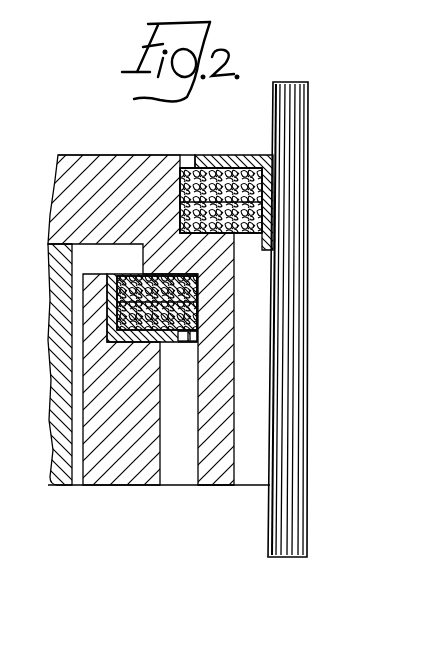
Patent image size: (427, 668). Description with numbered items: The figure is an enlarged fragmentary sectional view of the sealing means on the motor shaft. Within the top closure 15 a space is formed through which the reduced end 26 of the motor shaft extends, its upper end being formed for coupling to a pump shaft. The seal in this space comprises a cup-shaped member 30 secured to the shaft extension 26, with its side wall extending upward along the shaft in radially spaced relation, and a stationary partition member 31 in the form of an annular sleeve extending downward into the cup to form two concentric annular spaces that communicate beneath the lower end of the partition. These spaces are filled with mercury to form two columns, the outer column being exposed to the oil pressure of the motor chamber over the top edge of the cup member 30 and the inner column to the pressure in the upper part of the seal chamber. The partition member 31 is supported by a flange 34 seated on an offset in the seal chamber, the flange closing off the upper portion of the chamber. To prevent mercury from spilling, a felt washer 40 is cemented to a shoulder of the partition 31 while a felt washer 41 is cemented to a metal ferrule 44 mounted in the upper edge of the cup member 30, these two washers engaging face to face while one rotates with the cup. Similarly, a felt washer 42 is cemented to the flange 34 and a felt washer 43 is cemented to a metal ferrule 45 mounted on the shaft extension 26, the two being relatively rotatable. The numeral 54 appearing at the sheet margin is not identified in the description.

The top closure 15 is at (53, 448).
The reduced end of the motor shaft 26 is at (277, 540).
The cup-shaped member 30 is at (128, 462).
The partition member 31 is at (215, 470).
The flange 34 is at (88, 168).
The felt washer 40 is at (133, 276).
The felt washer 41 is at (190, 342).
The felt washer 42 is at (250, 234).
The felt washer 43 is at (213, 167).
The metal ferrule 44 is at (128, 302).
The metal ferrule 45 is at (238, 157).
The reference 54 is at (0, 631).